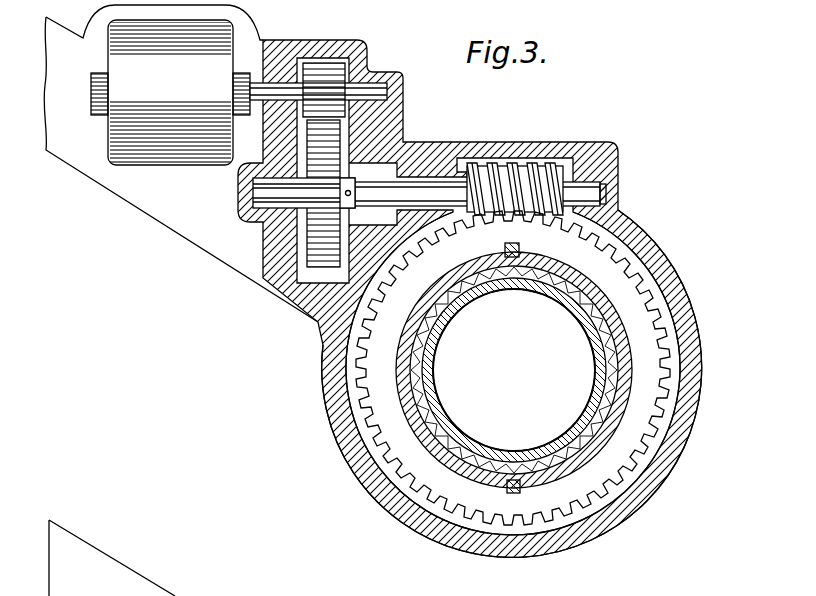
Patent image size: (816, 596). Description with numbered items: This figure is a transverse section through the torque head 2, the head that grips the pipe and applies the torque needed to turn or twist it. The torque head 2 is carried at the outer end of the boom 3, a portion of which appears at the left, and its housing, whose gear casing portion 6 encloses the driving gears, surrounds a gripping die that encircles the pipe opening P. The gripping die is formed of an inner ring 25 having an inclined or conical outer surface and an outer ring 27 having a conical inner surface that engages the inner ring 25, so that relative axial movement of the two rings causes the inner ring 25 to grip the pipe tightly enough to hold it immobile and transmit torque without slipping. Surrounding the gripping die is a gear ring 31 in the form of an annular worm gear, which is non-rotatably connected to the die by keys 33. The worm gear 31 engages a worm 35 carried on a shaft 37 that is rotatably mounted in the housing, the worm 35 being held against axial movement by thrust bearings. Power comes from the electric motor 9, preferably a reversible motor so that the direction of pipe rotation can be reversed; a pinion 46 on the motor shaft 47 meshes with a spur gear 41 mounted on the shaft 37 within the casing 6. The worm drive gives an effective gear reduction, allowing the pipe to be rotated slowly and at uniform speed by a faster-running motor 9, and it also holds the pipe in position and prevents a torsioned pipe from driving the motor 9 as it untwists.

The torque head 2 is at (694, 338).
The boom 3 is at (76, 157).
The gear casing 6 is at (322, 50).
The electric motor 9 is at (170, 92).
The inner ring 25 is at (610, 357).
The outer ring 27 is at (612, 417).
The gear ring 31 is at (648, 433).
The key 33 is at (519, 248).
The worm 35 is at (515, 165).
The shaft 37 is at (598, 188).
The spur gear 41 is at (312, 263).
The pinion 46 is at (341, 66).
The motor shaft 47 is at (389, 95).
The pipe opening P is at (432, 364).